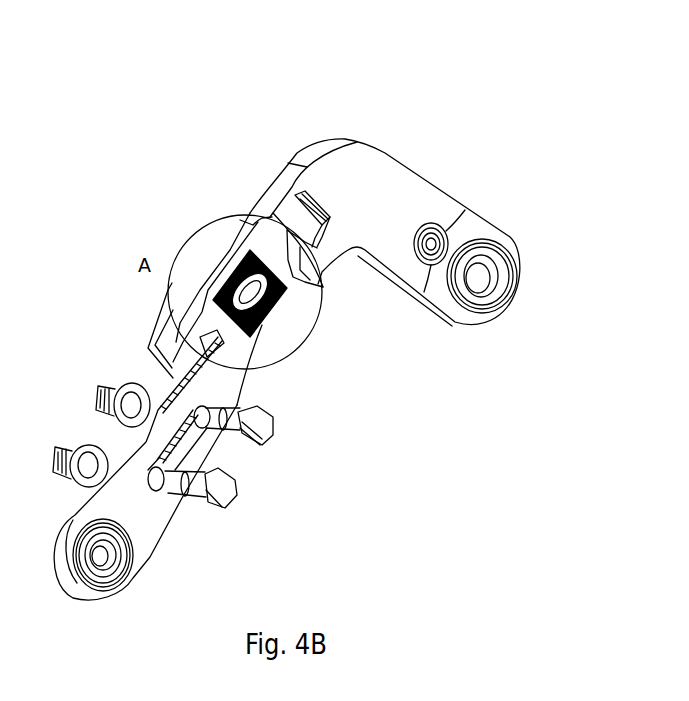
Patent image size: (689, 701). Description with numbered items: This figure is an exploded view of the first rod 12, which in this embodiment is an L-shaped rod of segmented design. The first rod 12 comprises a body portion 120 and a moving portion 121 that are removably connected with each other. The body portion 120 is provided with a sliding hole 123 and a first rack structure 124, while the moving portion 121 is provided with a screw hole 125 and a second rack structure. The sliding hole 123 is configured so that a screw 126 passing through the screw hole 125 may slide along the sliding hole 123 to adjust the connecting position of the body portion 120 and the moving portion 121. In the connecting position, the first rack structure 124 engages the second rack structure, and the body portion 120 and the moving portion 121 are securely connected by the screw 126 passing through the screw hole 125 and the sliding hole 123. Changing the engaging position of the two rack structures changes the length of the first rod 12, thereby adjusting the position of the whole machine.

The first rod 12 is at (304, 107).
The body portion 120 is at (361, 195).
The moving portion 121 is at (130, 502).
The sliding hole 123 is at (247, 320).
The first rack structure 124 is at (277, 300).
The screw hole 125 is at (155, 493).
The screw 126 is at (262, 445).